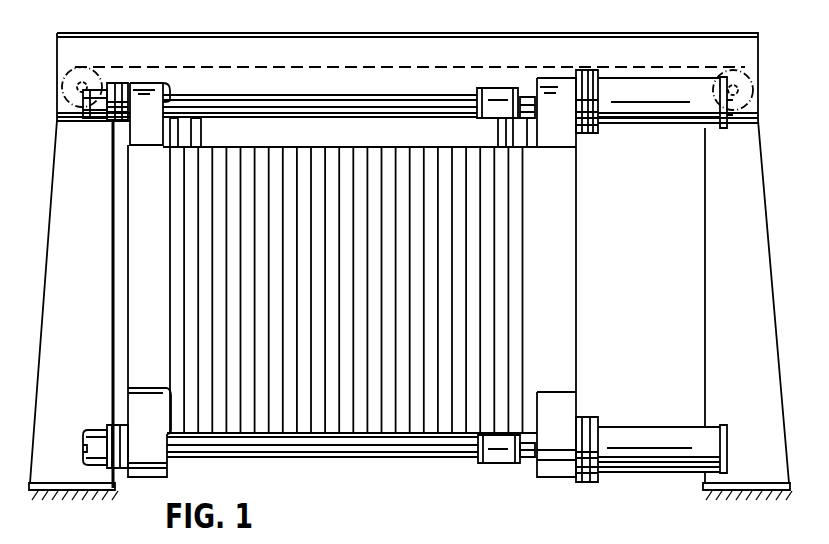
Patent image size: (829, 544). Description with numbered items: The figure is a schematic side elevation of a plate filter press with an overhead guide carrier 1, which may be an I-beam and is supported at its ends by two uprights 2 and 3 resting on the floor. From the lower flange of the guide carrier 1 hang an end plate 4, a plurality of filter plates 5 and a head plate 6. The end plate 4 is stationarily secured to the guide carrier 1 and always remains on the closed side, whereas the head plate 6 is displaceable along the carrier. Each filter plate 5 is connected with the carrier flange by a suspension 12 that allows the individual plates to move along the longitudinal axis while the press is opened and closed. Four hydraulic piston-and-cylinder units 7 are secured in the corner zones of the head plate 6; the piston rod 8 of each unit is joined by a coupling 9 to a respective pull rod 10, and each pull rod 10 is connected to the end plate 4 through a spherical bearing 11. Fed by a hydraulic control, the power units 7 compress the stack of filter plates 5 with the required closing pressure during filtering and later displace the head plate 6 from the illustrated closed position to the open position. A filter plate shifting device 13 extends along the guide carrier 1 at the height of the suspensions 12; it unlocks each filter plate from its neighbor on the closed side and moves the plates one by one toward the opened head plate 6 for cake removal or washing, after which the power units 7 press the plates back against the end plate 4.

The overhead guide carrier 1 is at (396, 66).
The upright 2 is at (96, 164).
The upright 3 is at (708, 263).
The end plate 4 is at (140, 305).
The filter plates 5 is at (203, 425).
The head plate 6 is at (568, 316).
The hydraulic piston-and-cylinder unit 7 is at (655, 120).
The piston rod 8 is at (529, 100).
The coupling 9 is at (493, 100).
The pull rod 10 is at (312, 100).
The spherical bearing 11 is at (124, 67).
The suspension 12 is at (207, 130).
The filter plate shifting device 13 is at (589, 62).